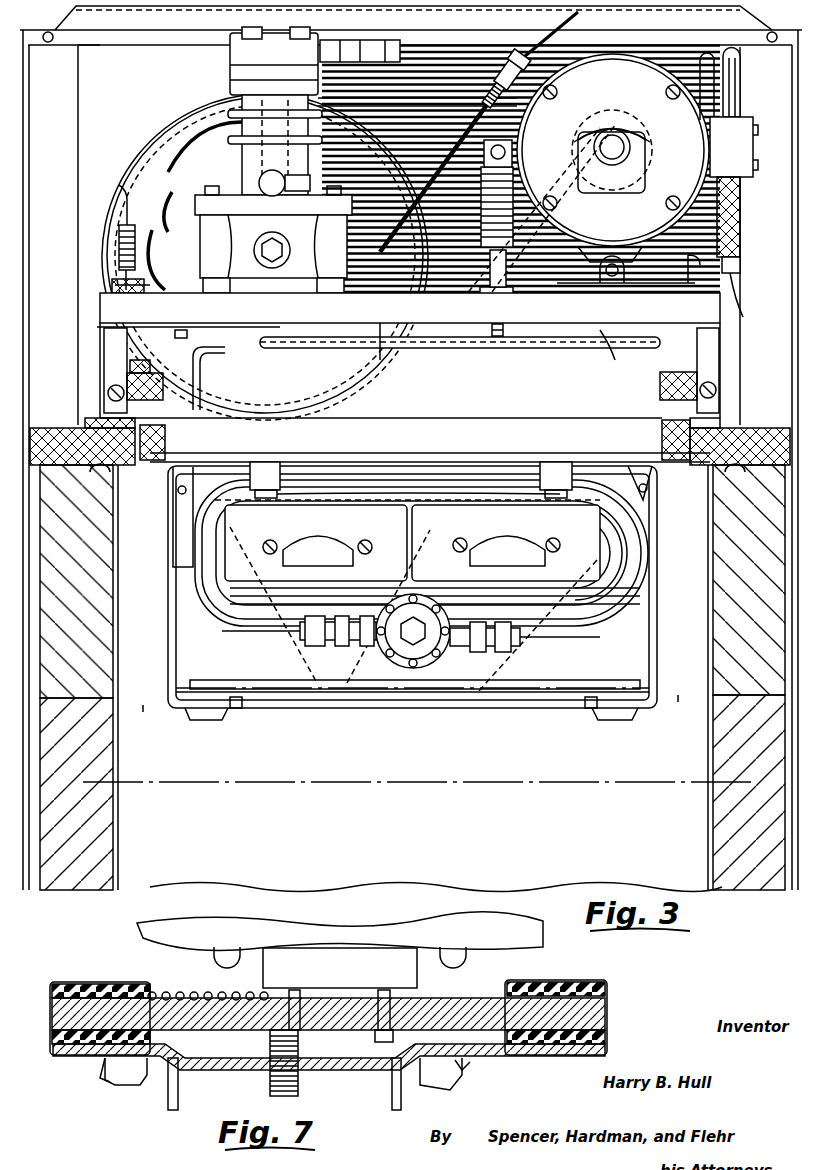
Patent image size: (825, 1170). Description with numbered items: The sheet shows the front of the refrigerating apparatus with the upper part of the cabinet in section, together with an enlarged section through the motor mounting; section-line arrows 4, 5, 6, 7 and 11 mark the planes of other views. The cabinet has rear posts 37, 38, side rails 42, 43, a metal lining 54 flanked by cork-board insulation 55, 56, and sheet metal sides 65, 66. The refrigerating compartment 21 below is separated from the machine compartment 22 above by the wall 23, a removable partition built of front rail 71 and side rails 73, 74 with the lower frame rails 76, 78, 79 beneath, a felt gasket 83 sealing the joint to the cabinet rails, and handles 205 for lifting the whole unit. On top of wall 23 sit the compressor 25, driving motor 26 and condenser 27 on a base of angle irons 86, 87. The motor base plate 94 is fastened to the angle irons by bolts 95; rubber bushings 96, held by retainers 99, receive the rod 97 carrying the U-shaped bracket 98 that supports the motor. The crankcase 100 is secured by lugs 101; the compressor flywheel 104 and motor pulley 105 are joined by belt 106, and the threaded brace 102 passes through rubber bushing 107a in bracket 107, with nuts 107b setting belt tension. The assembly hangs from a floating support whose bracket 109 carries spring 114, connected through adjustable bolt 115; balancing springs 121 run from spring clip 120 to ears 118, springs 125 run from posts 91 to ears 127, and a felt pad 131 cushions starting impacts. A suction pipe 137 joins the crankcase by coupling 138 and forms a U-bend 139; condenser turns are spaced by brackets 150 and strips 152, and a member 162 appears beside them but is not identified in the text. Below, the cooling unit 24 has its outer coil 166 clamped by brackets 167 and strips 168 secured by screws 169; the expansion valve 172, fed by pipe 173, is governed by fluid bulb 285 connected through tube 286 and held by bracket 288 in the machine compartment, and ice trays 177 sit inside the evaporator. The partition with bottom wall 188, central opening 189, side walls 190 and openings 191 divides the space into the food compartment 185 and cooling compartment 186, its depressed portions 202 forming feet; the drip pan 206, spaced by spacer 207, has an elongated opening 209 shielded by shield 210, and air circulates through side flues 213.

In FIG. 3, the section line 4- 4 is at (33, 240).
In FIG. 3, the section line 5- 5 is at (500, 127).
In FIG. 3, the section line 6- 6 is at (787, 272).
In FIG. 3, the section line 7— 7 is at (612, 227).
In FIG. 3, the section line 11- 11 is at (140, 793).
In FIG. 3, the refrigerating compartment 21 is at (285, 769).
In FIG. 3, the machine compartment 22 is at (128, 117).
In FIG. 3, the wall 23 is at (728, 405).
In FIG. 3, the cooling unit 24 is at (570, 528).
In FIG. 3, the compressor 25 is at (230, 72).
In FIG. 3, the driving motor 26 is at (685, 118).
In FIG. 7, the driving motor 26 is at (318, 937).
In FIG. 3, the condenser 27 is at (438, 56).
In FIG. 3, the rear post 37 is at (68, 93).
In FIG. 3, the rear post 38 is at (770, 152).
In FIG. 3, the side rail 42 is at (77, 440).
In FIG. 3, the side rail 43 is at (698, 423).
In FIG. 3, the metal lining 54 is at (712, 853).
In FIG. 3, the cork-board 55 is at (82, 600).
In FIG. 3, the cork-board 56 is at (720, 737).
In FIG. 3, the sheet metal side 65 is at (31, 143).
In FIG. 3, the sheet metal side 66 is at (789, 350).
In FIG. 3, the front rail 71 is at (602, 413).
In FIG. 3, the side rail 73 is at (100, 385).
In FIG. 3, the side rail 74 is at (732, 380).
In FIG. 3, the front rail 76 is at (528, 423).
In FIG. 3, the side rail 78 is at (153, 462).
In FIG. 3, the side rail 79 is at (660, 437).
In FIG. 3, the felt gasket 83 is at (93, 423).
In FIG. 7, the angle iron 86 is at (110, 1080).
In FIG. 3, the angle iron 87 is at (132, 310).
In FIG. 7, the angle iron 87 is at (463, 1067).
In FIG. 3, the bolt 91 is at (742, 300).
In FIG. 7, the bolt 91 is at (298, 1080).
In FIG. 7, the motor base plate 94 is at (553, 1053).
In FIG. 3, the bolts 95 is at (592, 302).
In FIG. 7, the bolts 95 is at (147, 1072).
In FIG. 7, the rubber bushings 96 is at (77, 982).
In FIG. 7, the rod 97 is at (197, 1003).
In FIG. 3, the U-shaped bracket 98 is at (653, 230).
In FIG. 7, the U-shaped bracket 98 is at (420, 960).
In FIG. 7, the retainers 99 is at (70, 982).
In FIG. 3, the crankcase 100 is at (203, 258).
In FIG. 3, the lugs 101 is at (207, 288).
In FIG. 3, the brace 102 is at (557, 43).
In FIG. 3, the flywheel 104 is at (158, 147).
In FIG. 3, the pulley 105 is at (572, 140).
In FIG. 3, the belt 106 is at (528, 286).
In FIG. 3, the bracket 107 is at (518, 70).
In FIG. 3, the rubber bushing 107a is at (540, 28).
In FIG. 3, the nuts 107b is at (548, 62).
In FIG. 3, the bracket 109 is at (523, 340).
In FIG. 3, the spring 114 is at (514, 190).
In FIG. 3, the adjustable bolt 115 is at (518, 327).
In FIG. 3, the ears 118 is at (120, 280).
In FIG. 3, the spring clip 120 is at (127, 225).
In FIG. 3, the spring 121 is at (112, 233).
In FIG. 3, the springs 125 is at (740, 262).
In FIG. 7, the springs 125 is at (245, 995).
In FIG. 3, the ears 127 is at (688, 282).
In FIG. 3, the felt pad 131 is at (113, 283).
In FIG. 3, the suction pipe 137 is at (396, 187).
In FIG. 3, the coupling 138 is at (262, 180).
In FIG. 3, the U-bend 139 is at (605, 343).
In FIG. 3, the condenser spacing and supporting brackets 150 is at (738, 77).
In FIG. 3, the strips 152 is at (705, 52).
In FIG. 3, the screen 162 is at (740, 247).
In FIG. 3, the outer coil 166 is at (620, 497).
In FIG. 3, the brackets 167 is at (249, 462).
In FIG. 3, the strips 168 is at (277, 488).
In FIG. 3, the screws 169 is at (282, 462).
In FIG. 3, the expansion valve 172 is at (417, 668).
In FIG. 3, the pipe 173 is at (633, 600).
In FIG. 3, the ice trays 177 is at (245, 540).
In FIG. 3, the food or storage compartment 185 is at (417, 867).
In FIG. 3, the cooling compartment 186 is at (180, 658).
In FIG. 3, the bottom wall 188 is at (217, 713).
In FIG. 3, the central opening 189 is at (365, 708).
In FIG. 3, the side walls 190 is at (168, 643).
In FIG. 3, the openings 191 is at (168, 573).
In FIG. 3, the depressed portions 202 is at (200, 717).
In FIG. 3, the handles 205 is at (108, 342).
In FIG. 3, the drip pan 206 is at (633, 690).
In FIG. 3, the spacer 207 is at (237, 703).
In FIG. 3, the elongated opening 209 is at (368, 693).
In FIG. 3, the shield 210 is at (480, 675).
In FIG. 3, the side flues 213 is at (142, 703).
In FIG. 3, the fluid bulb 285 is at (378, 360).
In FIG. 3, the tube 286 is at (233, 637).
In FIG. 3, the bracket 288 is at (312, 370).